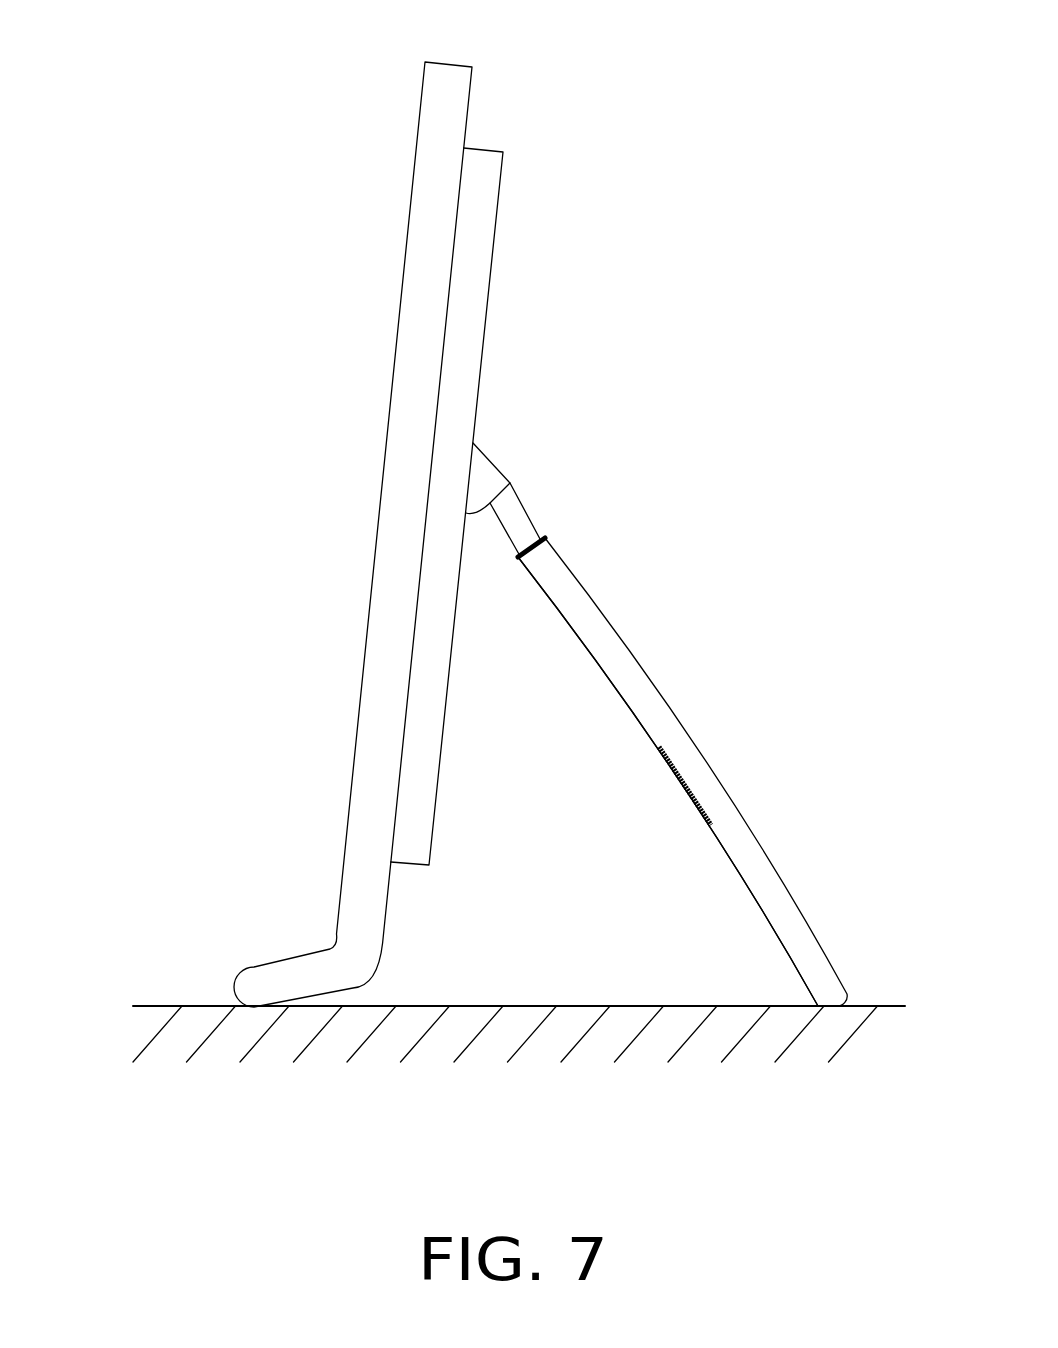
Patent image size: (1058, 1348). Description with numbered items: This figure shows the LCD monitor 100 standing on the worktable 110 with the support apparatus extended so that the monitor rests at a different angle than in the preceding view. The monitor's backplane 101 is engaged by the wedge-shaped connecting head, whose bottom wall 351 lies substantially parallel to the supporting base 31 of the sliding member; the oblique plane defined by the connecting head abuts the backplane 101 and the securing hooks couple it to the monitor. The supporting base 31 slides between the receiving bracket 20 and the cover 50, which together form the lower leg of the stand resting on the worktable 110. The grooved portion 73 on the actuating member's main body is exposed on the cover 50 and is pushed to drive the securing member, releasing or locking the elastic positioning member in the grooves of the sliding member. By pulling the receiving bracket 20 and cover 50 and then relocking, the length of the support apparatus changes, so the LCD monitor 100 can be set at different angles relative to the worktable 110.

The LCD monitor 100 is at (450, 90).
The backplane 101 is at (483, 185).
The bottom wall 351 is at (493, 458).
The supporting base 31 is at (525, 510).
The receiving bracket 20 is at (628, 642).
The cover 50 is at (603, 670).
The grooved portion 73 is at (677, 785).
The worktable 110 is at (165, 1006).